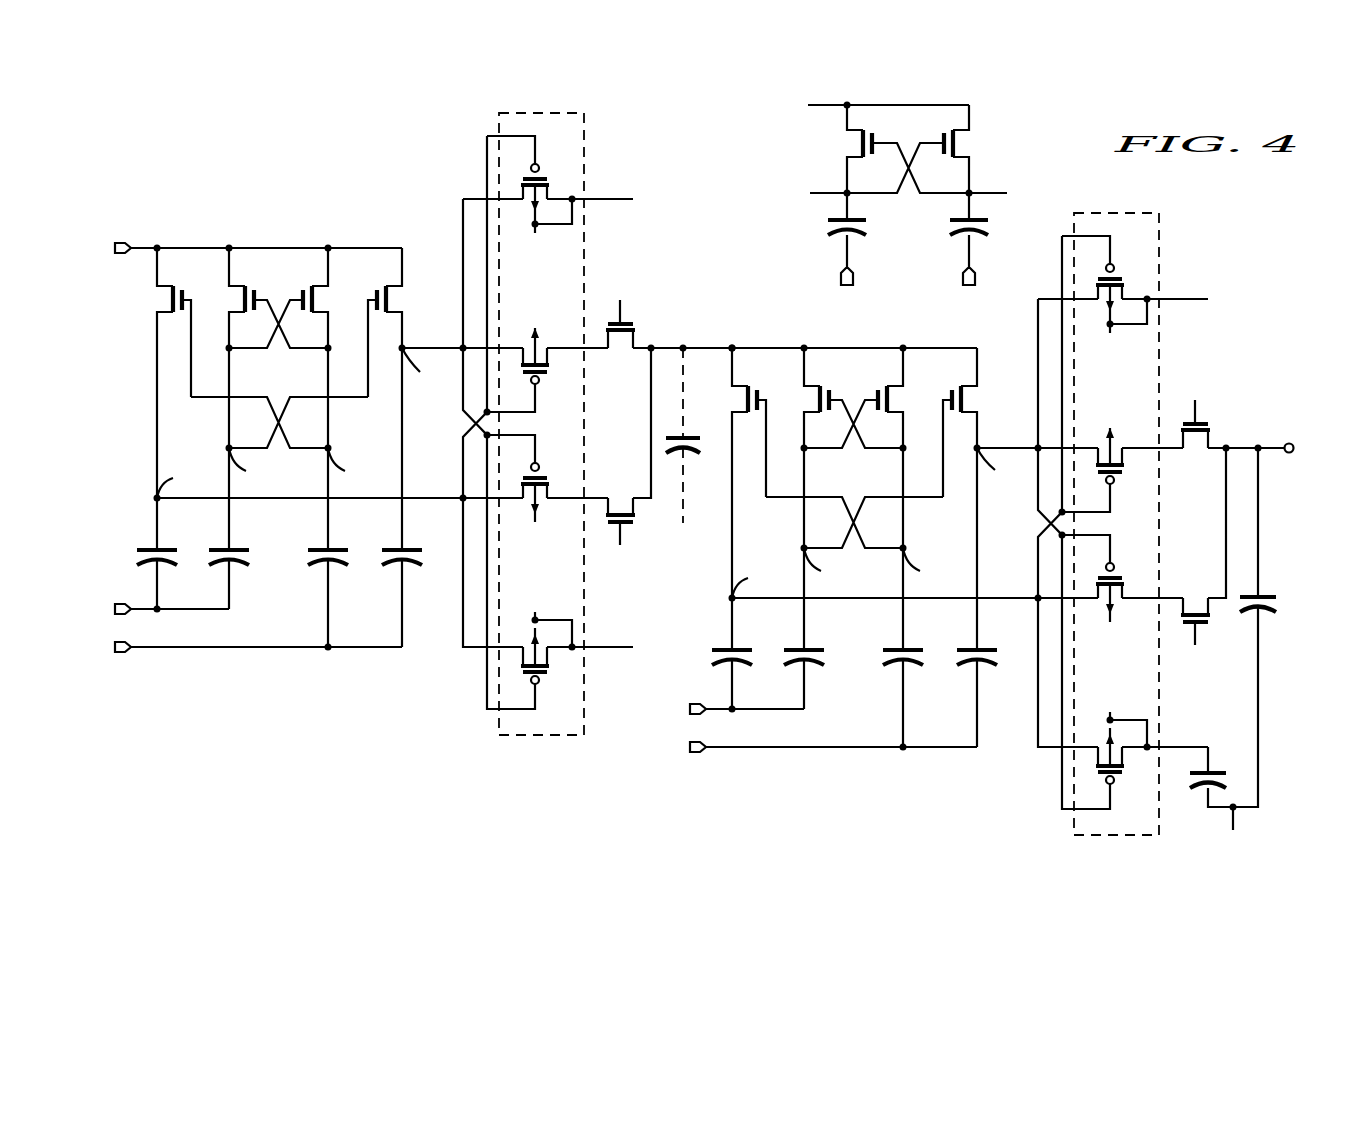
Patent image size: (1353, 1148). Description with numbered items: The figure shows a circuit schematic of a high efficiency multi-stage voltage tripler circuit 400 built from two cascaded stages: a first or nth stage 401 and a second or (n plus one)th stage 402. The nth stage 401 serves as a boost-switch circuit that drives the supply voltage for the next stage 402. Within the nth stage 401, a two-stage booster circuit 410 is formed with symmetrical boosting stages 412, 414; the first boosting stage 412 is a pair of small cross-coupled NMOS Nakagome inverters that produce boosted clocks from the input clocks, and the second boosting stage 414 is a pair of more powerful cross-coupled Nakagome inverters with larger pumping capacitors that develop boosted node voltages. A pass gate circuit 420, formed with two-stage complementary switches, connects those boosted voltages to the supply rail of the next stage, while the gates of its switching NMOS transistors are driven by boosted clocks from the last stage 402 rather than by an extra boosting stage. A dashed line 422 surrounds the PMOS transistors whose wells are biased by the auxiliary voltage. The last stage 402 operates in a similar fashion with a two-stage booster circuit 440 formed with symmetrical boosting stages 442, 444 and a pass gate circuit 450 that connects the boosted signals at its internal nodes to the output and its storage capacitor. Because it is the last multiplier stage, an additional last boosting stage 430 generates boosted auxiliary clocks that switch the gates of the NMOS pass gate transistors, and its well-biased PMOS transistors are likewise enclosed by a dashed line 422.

The voltage tripler circuit 400 is at (180, 165).
The nth stage 401 is at (683, 864).
The (n+1)th stage 402 is at (1268, 864).
The two-stage booster circuit 410 is at (399, 204).
The first boosting stage 412 is at (333, 244).
The second boosting stage 414 is at (180, 230).
The pass gate circuit 420 is at (452, 712).
The dashed line 422 is at (585, 153).
The last boosting stage 430 is at (1015, 125).
The two-stage booster circuit 440 is at (864, 514).
The first boosting stage 442 is at (854, 373).
The second boosting stage 444 is at (854, 398).
The pass gate circuit 450 is at (1095, 540).